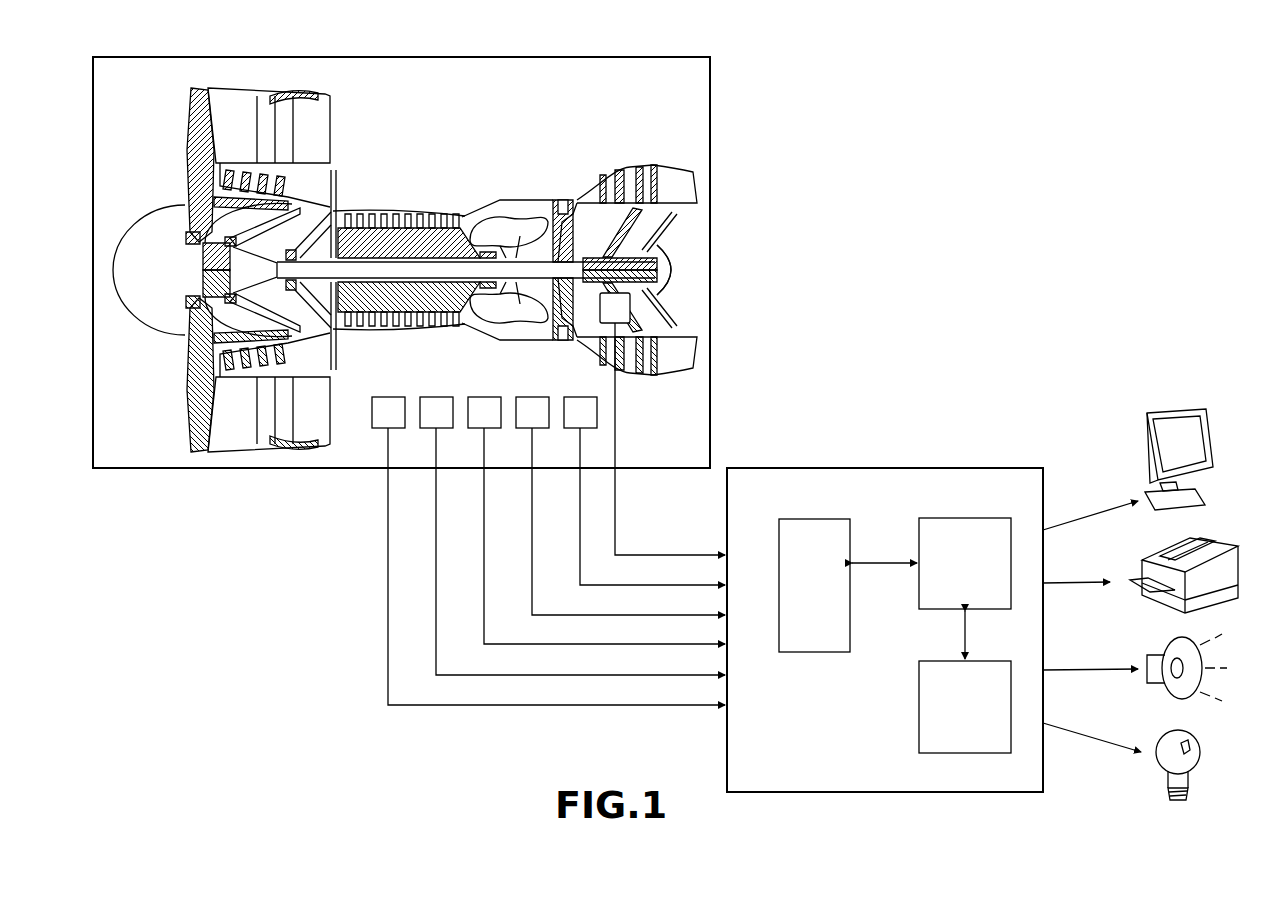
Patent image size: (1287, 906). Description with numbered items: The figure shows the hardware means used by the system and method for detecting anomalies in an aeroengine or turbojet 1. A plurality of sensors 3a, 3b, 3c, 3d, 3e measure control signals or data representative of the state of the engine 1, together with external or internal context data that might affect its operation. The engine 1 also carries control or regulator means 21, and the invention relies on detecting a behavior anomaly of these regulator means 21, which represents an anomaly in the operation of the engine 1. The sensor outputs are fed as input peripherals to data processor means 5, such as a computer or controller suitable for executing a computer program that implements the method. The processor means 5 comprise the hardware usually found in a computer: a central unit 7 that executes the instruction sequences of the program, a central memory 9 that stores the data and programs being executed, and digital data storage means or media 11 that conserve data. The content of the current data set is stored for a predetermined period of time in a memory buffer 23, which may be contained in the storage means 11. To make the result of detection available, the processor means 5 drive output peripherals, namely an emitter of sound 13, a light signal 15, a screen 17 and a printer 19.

The aeroengine 1 is at (440, 172).
The sensor 3a is at (388, 397).
The sensor 3b is at (436, 397).
The sensor 3c is at (484, 397).
The sensor 3d is at (532, 397).
The sensor 3e is at (580, 397).
The data processor means 5 is at (905, 460).
The central unit 7 is at (966, 518).
The central memory 9 is at (919, 706).
The digital data storage means 11 is at (815, 519).
The emitter of sound 13 is at (1224, 652).
The light signal emitter 15 is at (1212, 744).
The screen 17 is at (1230, 436).
The printer 19 is at (1232, 530).
The control or regulator means 21 is at (662, 424).
The memory buffer 23 is at (815, 616).